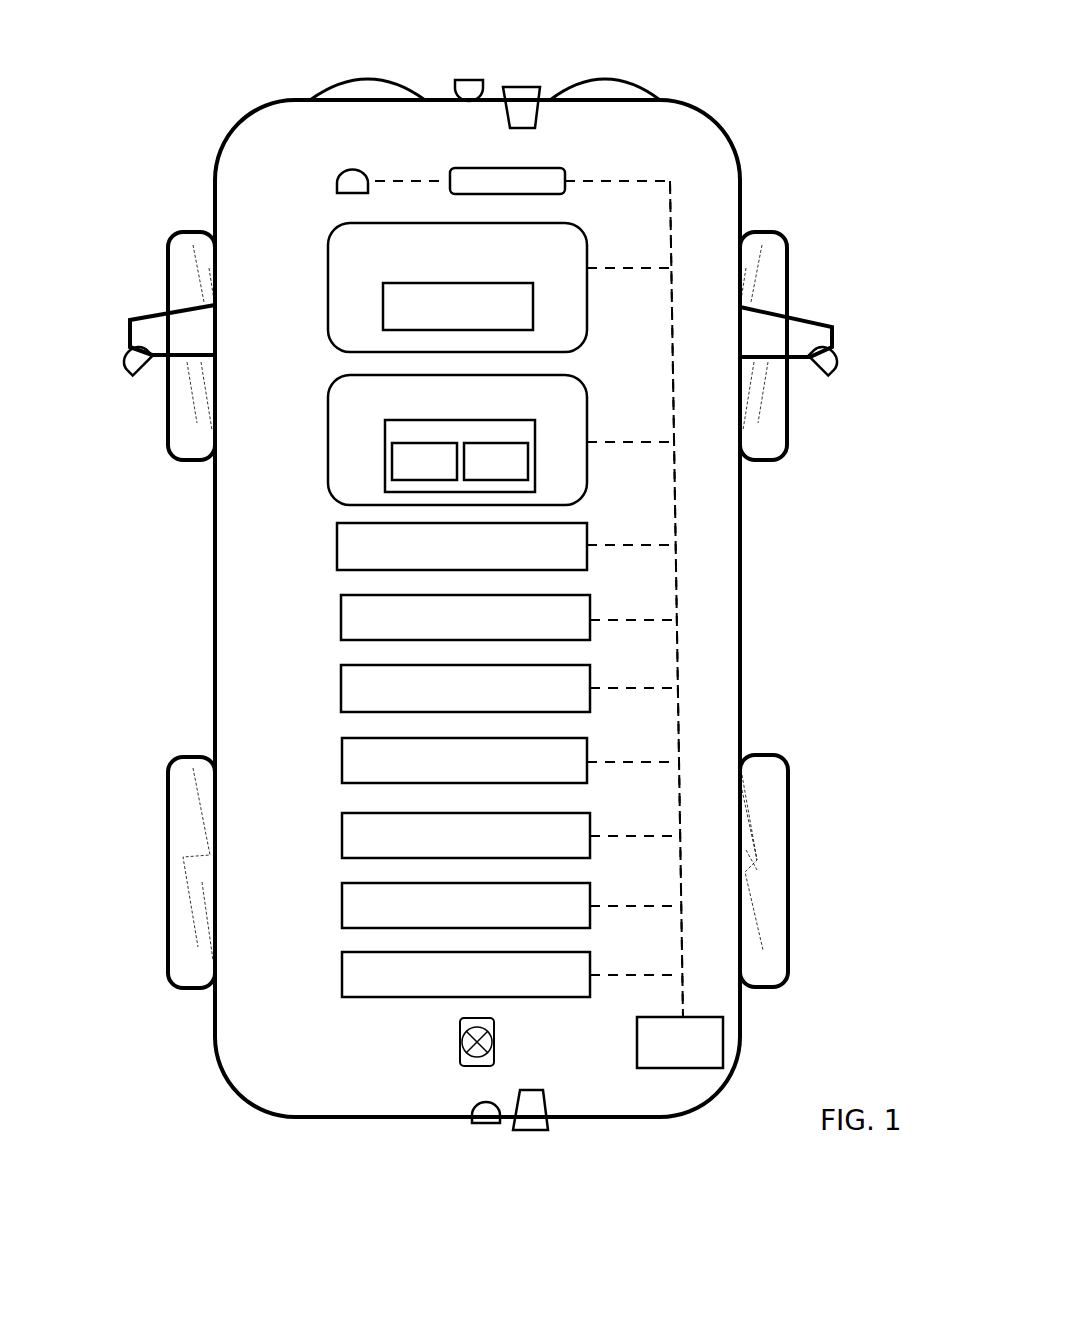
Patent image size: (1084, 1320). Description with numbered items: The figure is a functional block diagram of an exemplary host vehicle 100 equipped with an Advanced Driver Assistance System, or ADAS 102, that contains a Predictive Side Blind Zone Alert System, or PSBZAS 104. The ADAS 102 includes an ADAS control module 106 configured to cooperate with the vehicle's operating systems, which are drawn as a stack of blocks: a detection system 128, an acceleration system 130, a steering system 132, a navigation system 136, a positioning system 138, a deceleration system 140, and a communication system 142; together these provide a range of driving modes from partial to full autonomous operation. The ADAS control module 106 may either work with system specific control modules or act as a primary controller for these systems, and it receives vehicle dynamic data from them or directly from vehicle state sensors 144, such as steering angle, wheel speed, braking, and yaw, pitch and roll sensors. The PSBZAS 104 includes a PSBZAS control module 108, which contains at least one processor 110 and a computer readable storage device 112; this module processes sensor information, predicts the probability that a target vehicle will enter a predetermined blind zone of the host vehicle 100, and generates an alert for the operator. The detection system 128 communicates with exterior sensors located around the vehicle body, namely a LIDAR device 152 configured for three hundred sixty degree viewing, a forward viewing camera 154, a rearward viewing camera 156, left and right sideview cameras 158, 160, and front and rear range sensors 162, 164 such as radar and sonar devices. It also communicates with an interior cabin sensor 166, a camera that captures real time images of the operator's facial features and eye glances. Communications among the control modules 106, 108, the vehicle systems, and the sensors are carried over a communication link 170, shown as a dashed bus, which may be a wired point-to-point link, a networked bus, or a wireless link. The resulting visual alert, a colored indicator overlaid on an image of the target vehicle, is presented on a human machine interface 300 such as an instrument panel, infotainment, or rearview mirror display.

The host vehicle 100 is at (822, 197).
The Advanced Driver Assistance System (ADAS) 102 is at (457, 287).
The Predictive Side Blind Zone Alert System (PSBZAS) 104 is at (457, 440).
The ADAS control module 106 is at (458, 306).
The PSBZAS control module 108 is at (383, 440).
The processor 110 is at (414, 466).
The computer readable storage device 112 is at (512, 468).
The detection system 128 is at (462, 546).
The acceleration system 130 is at (465, 617).
The steering system 132 is at (465, 688).
The navigation system 136 is at (464, 760).
The positioning system 138 is at (466, 835).
The deceleration system 140 is at (466, 905).
The communication system 142 is at (466, 974).
The vehicle state sensors 144 is at (680, 1042).
The Light Detection and Ranging (LIDAR) device 152 is at (458, 1050).
The forward viewing camera 154 is at (456, 90).
The rearward viewing camera 156 is at (487, 1125).
The left sideview camera 158 is at (140, 373).
The right sideview camera 160 is at (828, 372).
The front range sensor 162 is at (523, 117).
The rear range sensor 164 is at (538, 1123).
The interior cabin sensor 166 is at (345, 182).
The communication link 170 is at (682, 698).
The human machine interface (HMI) 300 is at (540, 180).